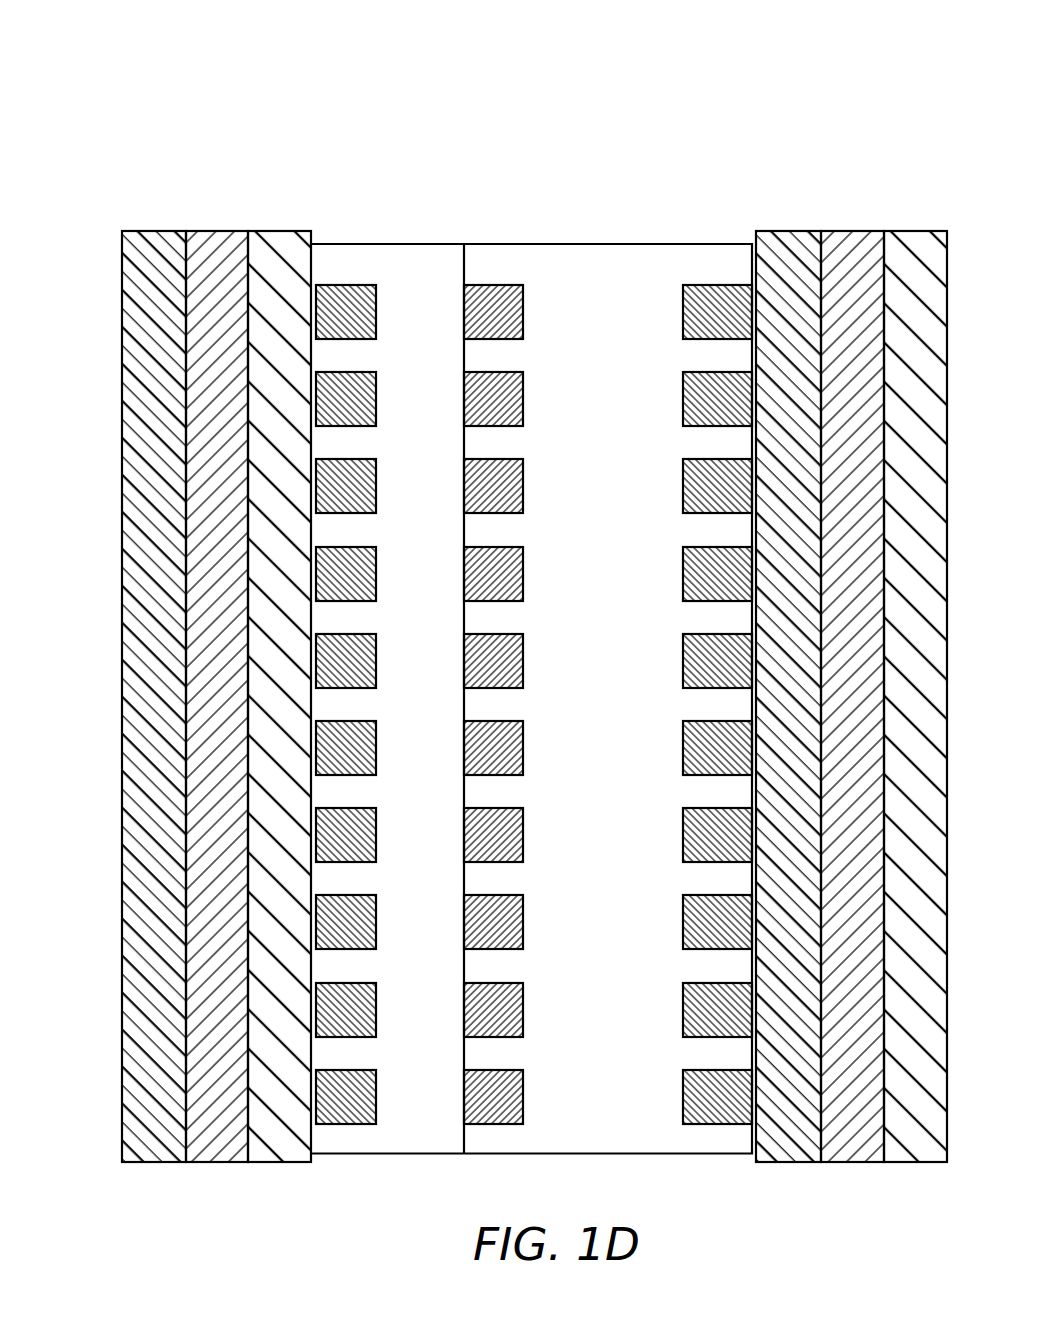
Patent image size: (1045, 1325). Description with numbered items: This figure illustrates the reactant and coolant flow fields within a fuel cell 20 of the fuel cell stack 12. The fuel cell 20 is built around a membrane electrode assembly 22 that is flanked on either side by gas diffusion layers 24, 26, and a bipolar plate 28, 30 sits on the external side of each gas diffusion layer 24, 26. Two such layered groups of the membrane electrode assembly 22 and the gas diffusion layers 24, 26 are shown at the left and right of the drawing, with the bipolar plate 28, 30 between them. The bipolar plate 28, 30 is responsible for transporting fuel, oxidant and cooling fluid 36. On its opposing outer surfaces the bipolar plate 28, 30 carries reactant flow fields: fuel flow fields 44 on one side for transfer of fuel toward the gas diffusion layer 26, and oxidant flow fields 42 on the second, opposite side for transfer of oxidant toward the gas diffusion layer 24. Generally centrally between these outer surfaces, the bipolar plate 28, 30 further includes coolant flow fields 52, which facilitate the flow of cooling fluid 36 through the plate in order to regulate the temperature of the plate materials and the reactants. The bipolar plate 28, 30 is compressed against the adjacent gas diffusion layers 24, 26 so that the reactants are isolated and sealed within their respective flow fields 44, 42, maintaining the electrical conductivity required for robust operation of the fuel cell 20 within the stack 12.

The fuel cell stack 12 is at (168, 121).
The fuel cell 20 is at (534, 672).
The membrane electrode assembly 22 is at (222, 240).
The gas diffusion layer 24 is at (157, 240).
The gas diffusion layer 26 is at (275, 240).
The bipolar plate 28 is at (551, 185).
The bipolar plate 30 is at (531, 659).
The cooling fluid 36 is at (481, 305).
The oxidant flow fields 42 is at (723, 318).
The fuel flow fields 44 is at (336, 308).
The coolant flow fields 52 is at (512, 318).